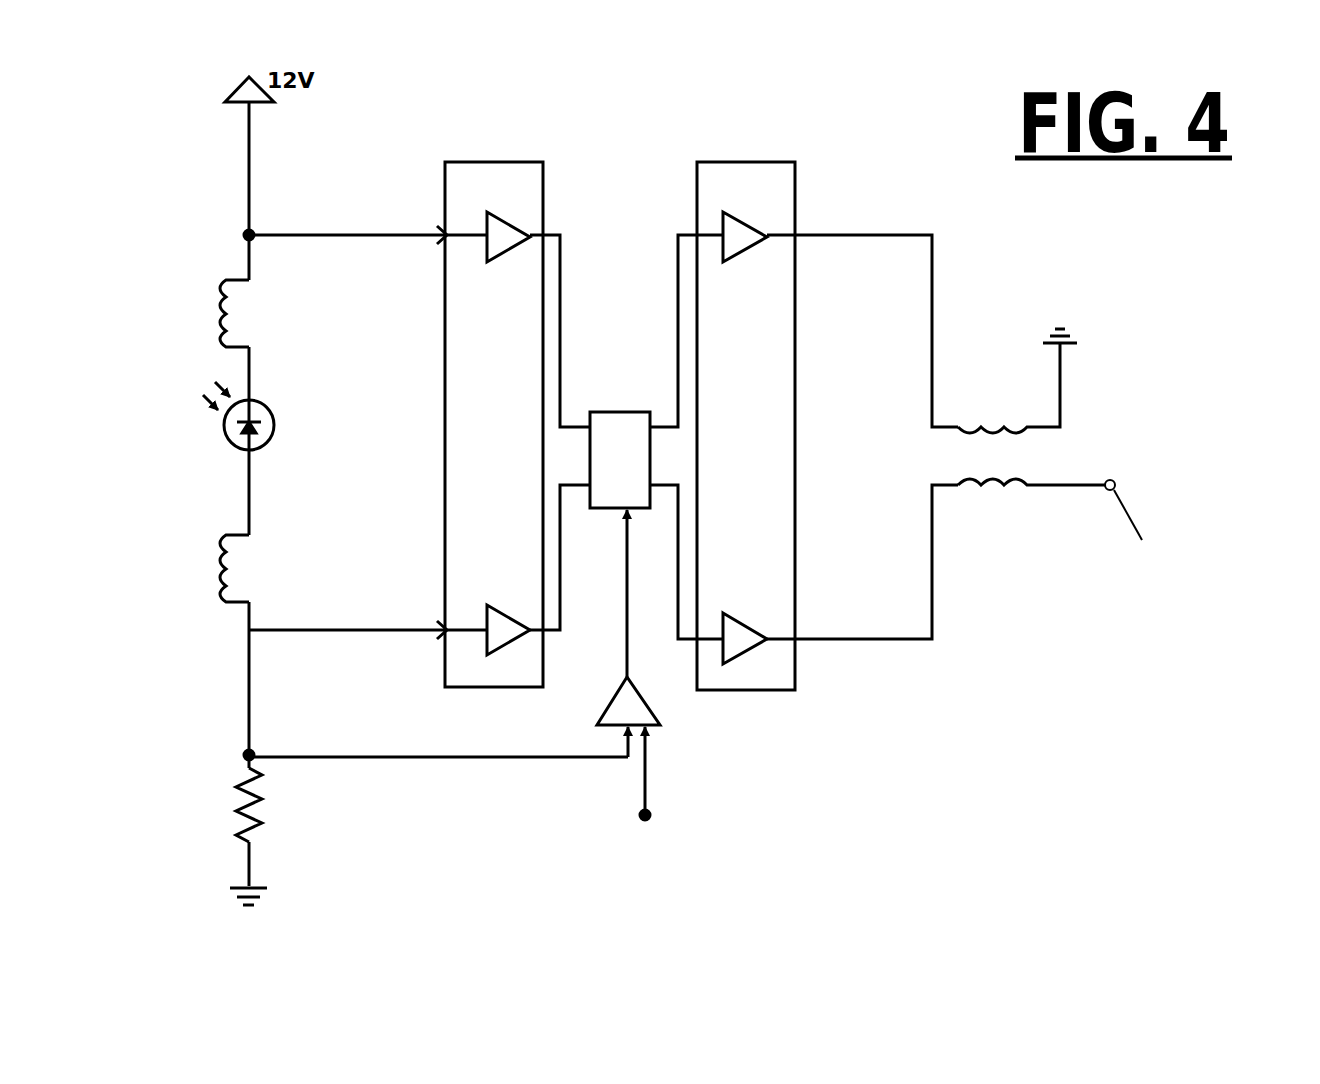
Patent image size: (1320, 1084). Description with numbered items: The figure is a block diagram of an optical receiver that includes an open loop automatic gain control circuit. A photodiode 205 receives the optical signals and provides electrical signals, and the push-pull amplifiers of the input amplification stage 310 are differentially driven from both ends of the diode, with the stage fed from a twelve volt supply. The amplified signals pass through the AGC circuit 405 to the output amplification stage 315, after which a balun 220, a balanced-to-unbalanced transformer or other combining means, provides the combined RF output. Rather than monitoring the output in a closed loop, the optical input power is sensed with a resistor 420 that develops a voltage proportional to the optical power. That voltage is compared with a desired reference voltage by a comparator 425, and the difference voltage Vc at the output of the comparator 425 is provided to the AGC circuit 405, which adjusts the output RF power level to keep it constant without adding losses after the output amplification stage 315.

The photodiode 205 is at (222, 437).
The input amplification stage 310 is at (509, 160).
The output amplification stage 315 is at (745, 160).
The open loop automatic gain control circuit 405 is at (598, 487).
The comparator 425 is at (661, 720).
The resistor 420 is at (238, 751).
The balun 220 is at (999, 488).